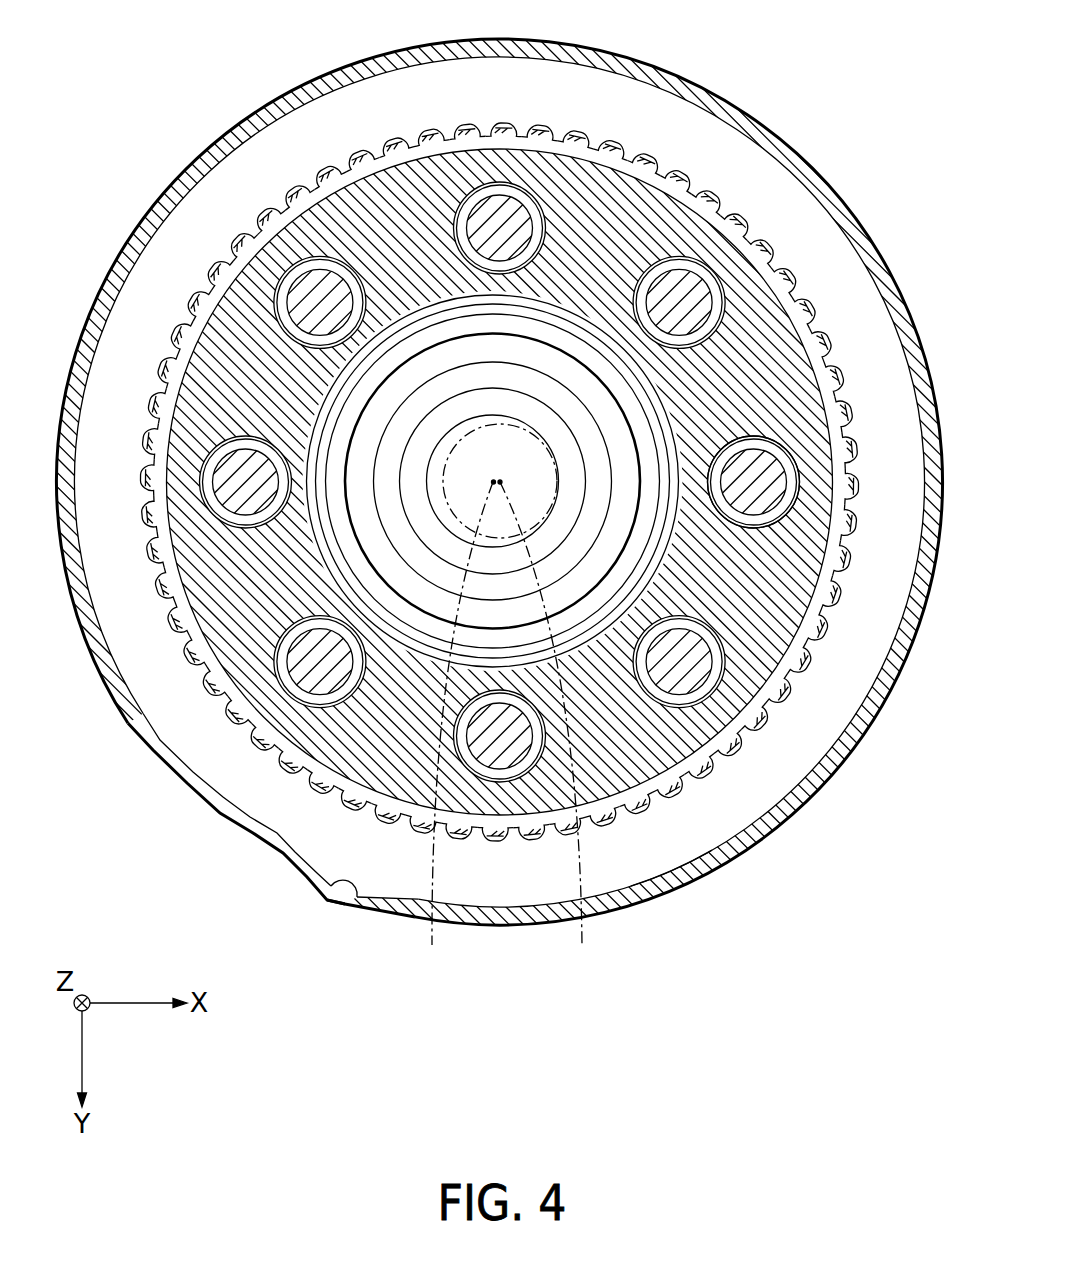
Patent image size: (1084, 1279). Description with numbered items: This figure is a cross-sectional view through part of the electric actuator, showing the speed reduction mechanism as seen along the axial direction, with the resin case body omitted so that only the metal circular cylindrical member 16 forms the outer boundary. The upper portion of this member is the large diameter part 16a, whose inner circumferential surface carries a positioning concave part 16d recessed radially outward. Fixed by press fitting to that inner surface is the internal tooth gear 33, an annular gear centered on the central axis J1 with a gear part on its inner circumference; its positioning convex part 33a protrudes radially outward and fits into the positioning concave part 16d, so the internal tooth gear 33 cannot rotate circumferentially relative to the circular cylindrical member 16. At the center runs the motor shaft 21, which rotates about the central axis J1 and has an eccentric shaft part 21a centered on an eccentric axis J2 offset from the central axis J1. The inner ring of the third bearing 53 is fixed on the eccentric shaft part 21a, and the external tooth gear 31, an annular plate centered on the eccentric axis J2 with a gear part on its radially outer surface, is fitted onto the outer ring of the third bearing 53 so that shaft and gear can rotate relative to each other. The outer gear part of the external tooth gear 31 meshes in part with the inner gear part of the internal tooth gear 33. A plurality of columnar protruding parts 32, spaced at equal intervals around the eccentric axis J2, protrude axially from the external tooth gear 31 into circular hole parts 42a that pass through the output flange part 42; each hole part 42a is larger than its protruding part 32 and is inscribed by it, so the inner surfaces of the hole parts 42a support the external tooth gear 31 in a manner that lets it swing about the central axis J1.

The circular cylindrical member 16 is at (757, 118).
The large diameter part 16a is at (672, 878).
The positioning concave part 16d is at (338, 897).
The motor shaft 21 is at (447, 530).
The eccentric shaft part 21a is at (452, 443).
The external tooth gear 31 is at (257, 242).
The protruding parts 32 is at (749, 492).
The internal tooth gear 33 is at (237, 773).
The positioning convex part 33a is at (333, 878).
The output flange part 42 is at (767, 368).
The hole parts 42a is at (785, 453).
The third bearing 53 is at (533, 393).
The central axis J1 is at (557, 733).
The eccentric axis J2 is at (443, 733).